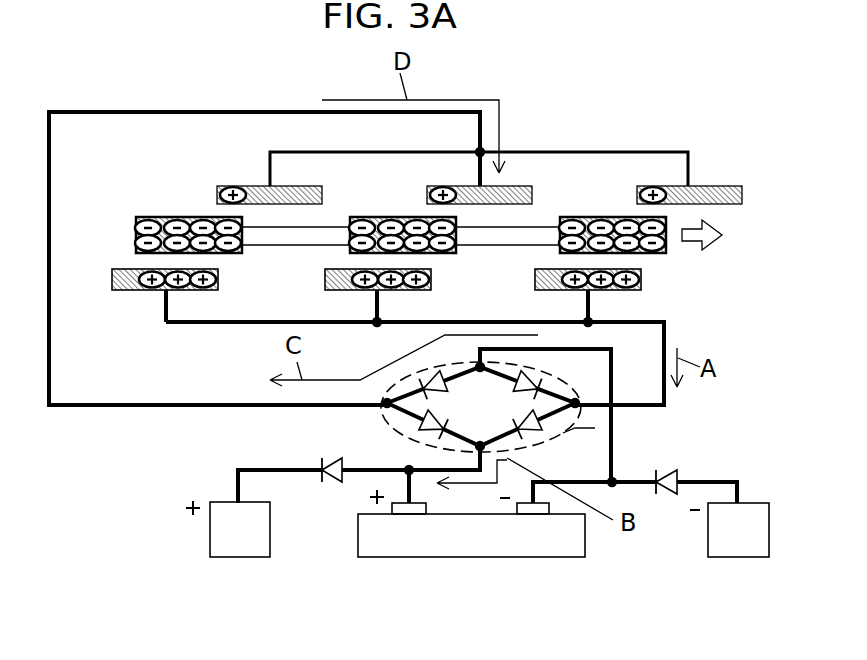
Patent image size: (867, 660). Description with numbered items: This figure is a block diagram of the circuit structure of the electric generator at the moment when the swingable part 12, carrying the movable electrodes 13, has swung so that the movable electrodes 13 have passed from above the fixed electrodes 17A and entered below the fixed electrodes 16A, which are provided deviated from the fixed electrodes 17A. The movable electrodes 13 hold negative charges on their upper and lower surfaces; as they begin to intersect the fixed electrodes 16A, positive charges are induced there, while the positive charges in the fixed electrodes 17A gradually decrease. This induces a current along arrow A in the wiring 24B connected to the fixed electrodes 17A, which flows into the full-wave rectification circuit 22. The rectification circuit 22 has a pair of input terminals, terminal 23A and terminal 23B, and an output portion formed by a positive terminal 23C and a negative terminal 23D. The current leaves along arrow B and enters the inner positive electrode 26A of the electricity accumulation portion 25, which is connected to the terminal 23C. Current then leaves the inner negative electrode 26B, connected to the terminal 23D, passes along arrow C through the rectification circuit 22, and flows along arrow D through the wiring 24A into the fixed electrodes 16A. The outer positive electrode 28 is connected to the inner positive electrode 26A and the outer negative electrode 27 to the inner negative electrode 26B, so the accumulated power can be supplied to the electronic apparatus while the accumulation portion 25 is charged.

The swingable part 12 is at (530, 228).
The movable electrodes 13 is at (590, 217).
The fixed electrodes 16A is at (707, 186).
The fixed electrodes 17A is at (640, 280).
The full-wave rectification circuit 22 is at (393, 430).
The terminal 23A is at (385, 405).
The terminal 23B is at (577, 405).
The terminal 23C is at (478, 448).
The terminal 23D is at (473, 364).
The wiring 24A is at (160, 408).
The wiring 24B is at (650, 407).
The electricity accumulation portion 25 is at (563, 558).
The inner positive electrode 26A is at (392, 508).
The inner negative electrode 26B is at (517, 508).
The outer negative electrode 27 is at (733, 558).
The outer positive electrode 28 is at (238, 560).